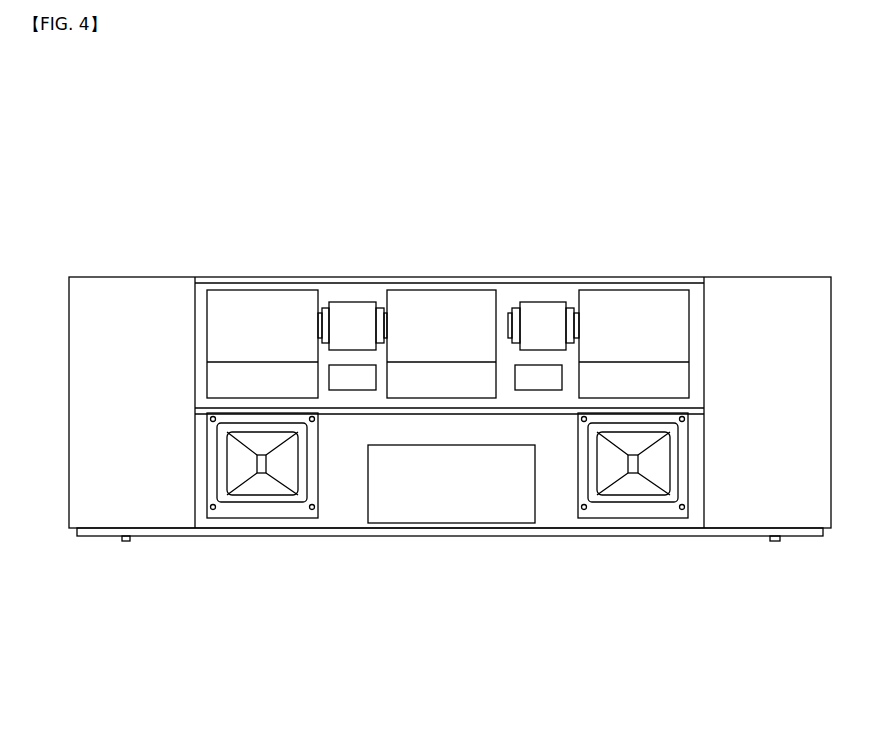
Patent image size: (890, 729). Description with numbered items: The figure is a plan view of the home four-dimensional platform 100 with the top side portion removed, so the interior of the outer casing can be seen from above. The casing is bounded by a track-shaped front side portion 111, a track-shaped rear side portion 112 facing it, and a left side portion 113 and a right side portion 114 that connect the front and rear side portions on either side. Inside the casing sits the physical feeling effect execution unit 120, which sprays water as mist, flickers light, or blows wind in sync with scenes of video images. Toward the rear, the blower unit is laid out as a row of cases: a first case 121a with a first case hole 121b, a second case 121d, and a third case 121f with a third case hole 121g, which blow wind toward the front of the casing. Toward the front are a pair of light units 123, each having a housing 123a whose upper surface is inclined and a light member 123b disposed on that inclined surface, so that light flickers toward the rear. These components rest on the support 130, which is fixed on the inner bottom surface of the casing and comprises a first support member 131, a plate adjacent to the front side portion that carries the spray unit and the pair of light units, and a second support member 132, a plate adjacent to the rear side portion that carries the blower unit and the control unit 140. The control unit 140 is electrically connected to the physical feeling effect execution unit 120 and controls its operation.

The home 4D platform 100 is at (81, 95).
The front side portion 111 is at (172, 532).
The rear side portion 112 is at (675, 277).
The left side portion 113 is at (128, 290).
The right side portion 114 is at (757, 290).
The physical feeling effect execution unit 120 is at (428, 508).
The first case 121a is at (241, 310).
The first case hole 121b is at (352, 312).
The second case 121d is at (441, 312).
The third case 121f is at (626, 312).
The third case hole 121g is at (557, 312).
The light unit 123 is at (303, 623).
The housing 123a is at (228, 506).
The light member 123b is at (265, 472).
The support 130 is at (672, 623).
The first support member 131 is at (553, 490).
The second support member 132 is at (505, 300).
The control unit 140 is at (352, 390).